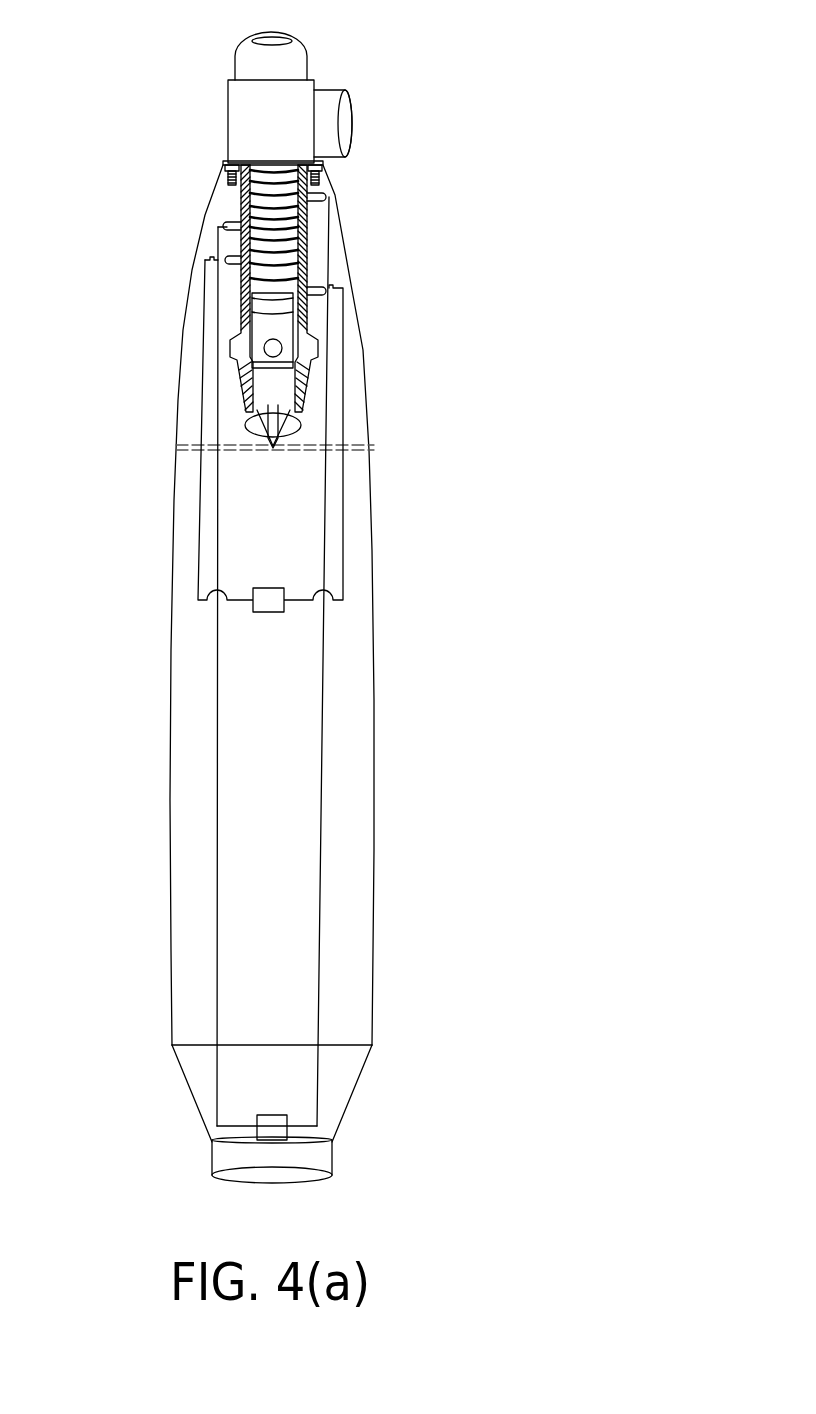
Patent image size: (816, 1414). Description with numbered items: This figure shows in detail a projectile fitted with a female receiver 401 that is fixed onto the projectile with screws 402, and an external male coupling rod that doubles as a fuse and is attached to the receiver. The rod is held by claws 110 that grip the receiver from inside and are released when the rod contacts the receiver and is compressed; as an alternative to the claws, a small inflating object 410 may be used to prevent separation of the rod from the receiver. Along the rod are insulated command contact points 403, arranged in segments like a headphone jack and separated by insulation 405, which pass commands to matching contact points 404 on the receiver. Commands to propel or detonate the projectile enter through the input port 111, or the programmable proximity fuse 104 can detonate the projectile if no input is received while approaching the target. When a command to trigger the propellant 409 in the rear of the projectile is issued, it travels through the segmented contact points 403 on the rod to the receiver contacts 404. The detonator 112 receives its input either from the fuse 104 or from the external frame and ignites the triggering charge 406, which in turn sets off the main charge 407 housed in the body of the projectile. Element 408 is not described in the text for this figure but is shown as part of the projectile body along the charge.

The proximity fuse 104 is at (267, 38).
The input port 111 is at (348, 118).
The screws 402 is at (225, 165).
The contact points on the receiver 404 is at (240, 223).
The insulated command contact points 403 is at (307, 227).
The female receiver 401 is at (305, 253).
The insulation 405 is at (262, 274).
The claws 110 is at (313, 343).
The detonator 112 is at (297, 425).
The small inflating object 410 is at (247, 427).
The triggering charge 406 is at (205, 407).
The main charge 407 is at (348, 637).
The inner cartridge 408 is at (217, 797).
The propellant 409 is at (337, 1077).